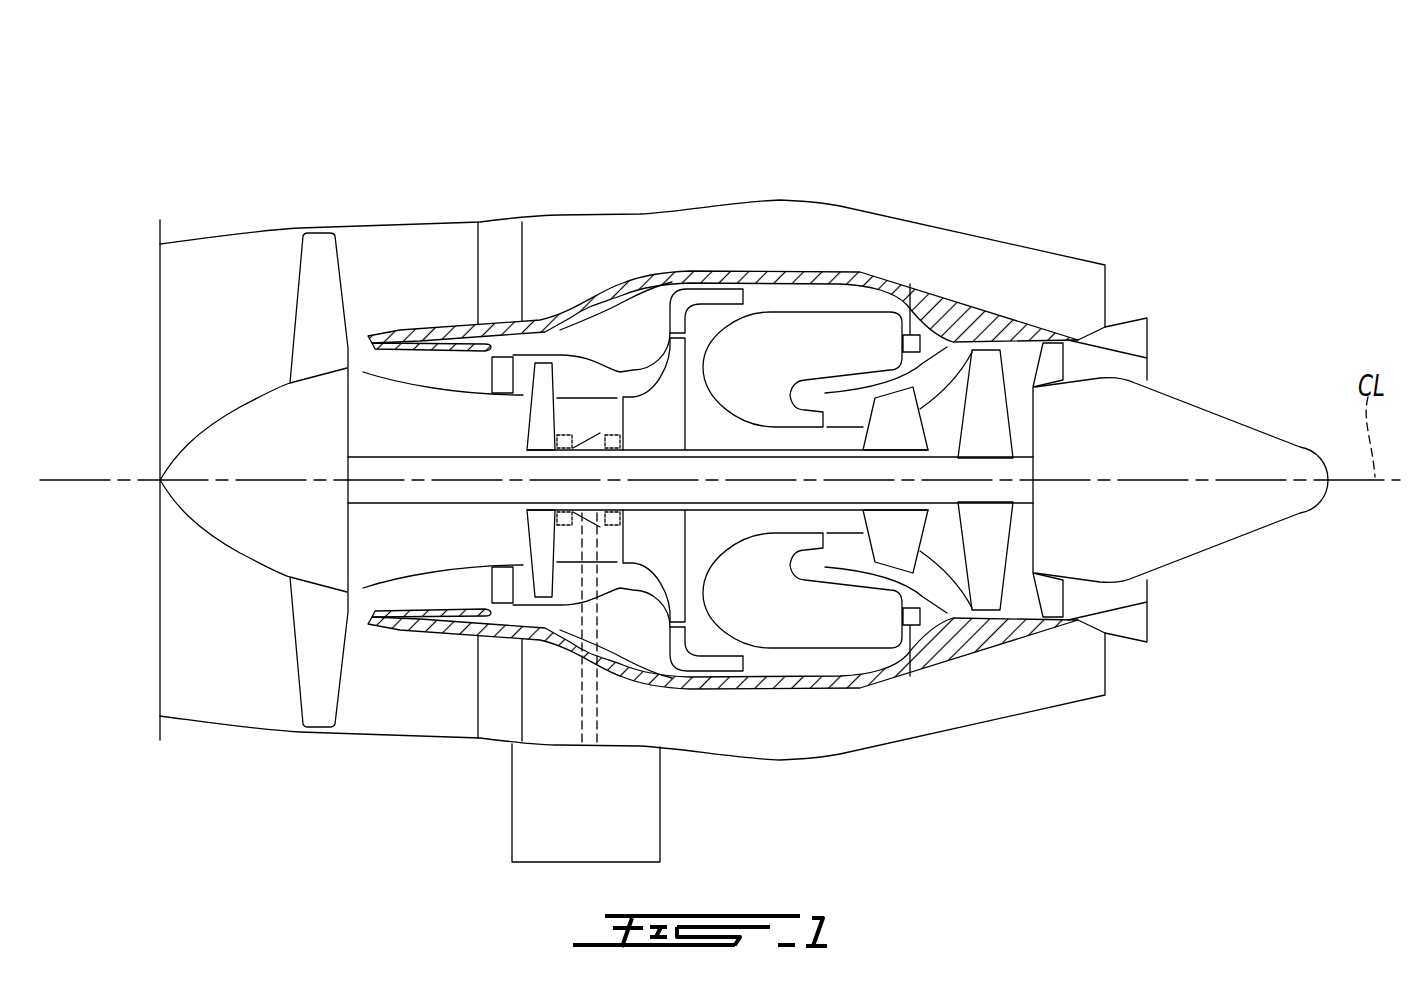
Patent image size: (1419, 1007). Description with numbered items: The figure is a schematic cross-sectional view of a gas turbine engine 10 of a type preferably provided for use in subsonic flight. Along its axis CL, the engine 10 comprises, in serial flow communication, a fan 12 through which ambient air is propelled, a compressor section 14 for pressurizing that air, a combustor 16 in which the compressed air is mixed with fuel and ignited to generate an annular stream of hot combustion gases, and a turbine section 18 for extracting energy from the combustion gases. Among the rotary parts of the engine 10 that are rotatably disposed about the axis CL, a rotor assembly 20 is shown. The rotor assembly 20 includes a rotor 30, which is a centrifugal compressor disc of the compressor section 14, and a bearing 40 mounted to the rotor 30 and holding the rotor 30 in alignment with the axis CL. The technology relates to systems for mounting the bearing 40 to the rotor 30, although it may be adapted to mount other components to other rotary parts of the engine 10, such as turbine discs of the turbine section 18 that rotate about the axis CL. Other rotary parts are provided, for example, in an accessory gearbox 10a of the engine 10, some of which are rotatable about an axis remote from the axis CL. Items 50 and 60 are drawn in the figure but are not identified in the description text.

The gas turbine engine 10 is at (964, 173).
The accessory gearbox 10a is at (547, 827).
The fan 12 is at (313, 640).
The compressor section 14 is at (605, 388).
The combustor 16 is at (803, 333).
The turbine section 18 is at (942, 550).
The rotor assembly 20 is at (643, 378).
The rotor 30 is at (662, 540).
The bearing 40 is at (607, 527).
The bearing assembly 50 is at (553, 527).
The support strut 60 is at (577, 527).